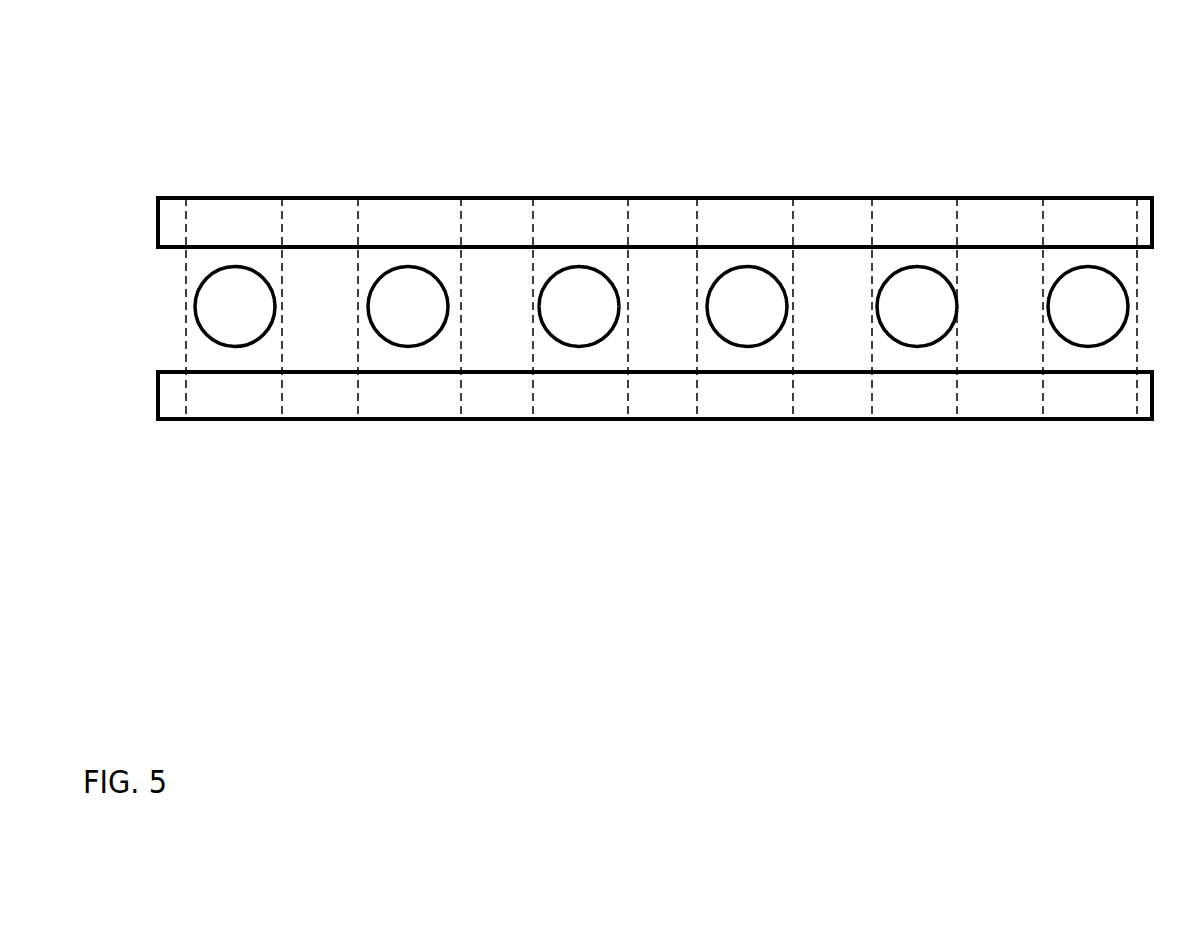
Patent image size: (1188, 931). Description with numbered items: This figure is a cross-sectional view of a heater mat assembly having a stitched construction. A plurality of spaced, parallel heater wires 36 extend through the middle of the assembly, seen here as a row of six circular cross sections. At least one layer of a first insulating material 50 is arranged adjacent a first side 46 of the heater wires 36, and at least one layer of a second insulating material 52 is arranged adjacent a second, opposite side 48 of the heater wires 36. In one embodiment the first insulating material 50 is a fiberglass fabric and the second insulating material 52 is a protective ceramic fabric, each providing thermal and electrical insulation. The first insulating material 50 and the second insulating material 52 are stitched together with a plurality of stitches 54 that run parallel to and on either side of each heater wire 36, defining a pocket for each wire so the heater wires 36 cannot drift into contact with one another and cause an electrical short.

The heater wires 36 is at (911, 298).
The first side 46 is at (584, 262).
The second side 48 is at (580, 347).
The first insulating material 50 is at (404, 198).
The second insulating material 52 is at (320, 408).
The stitches 54 is at (280, 220).